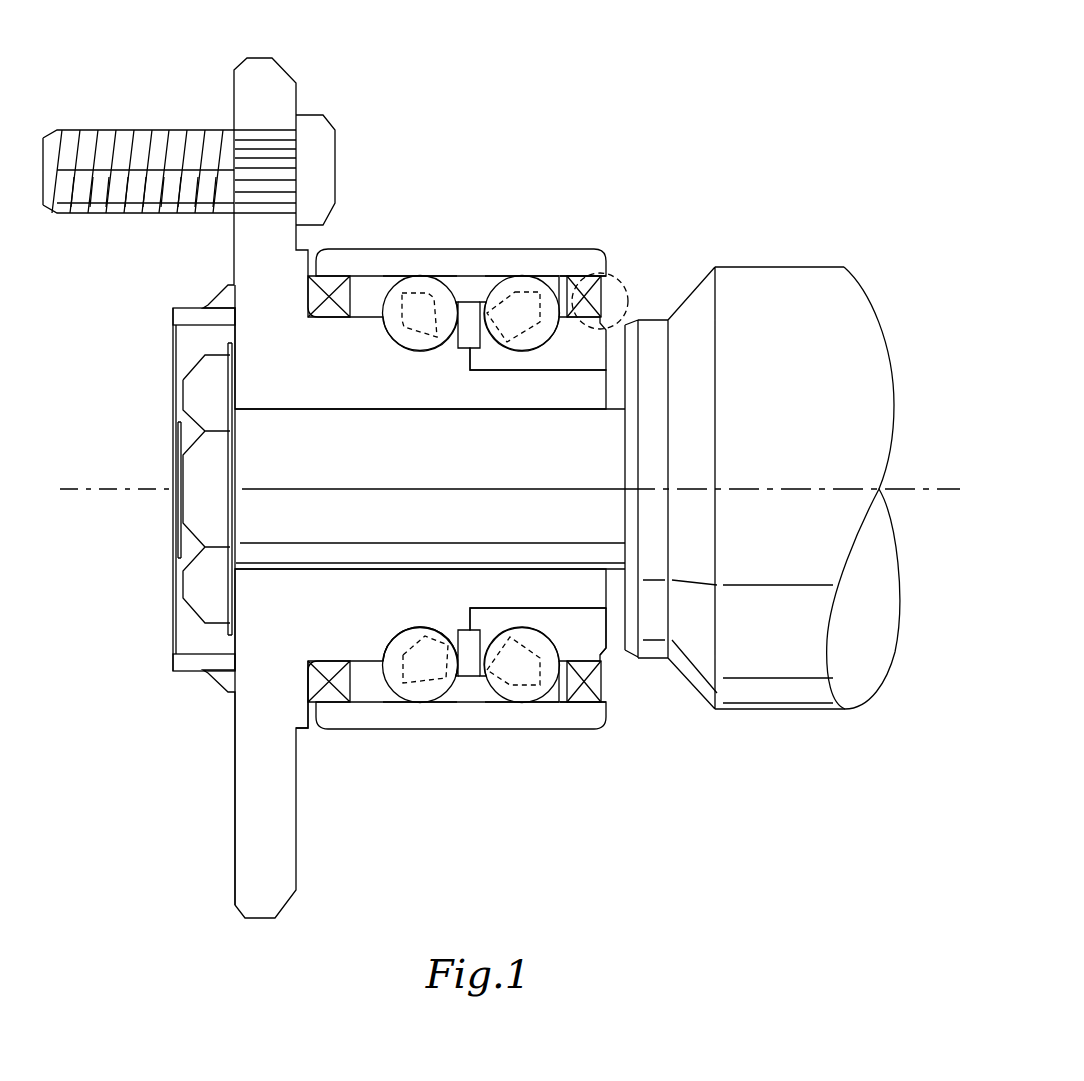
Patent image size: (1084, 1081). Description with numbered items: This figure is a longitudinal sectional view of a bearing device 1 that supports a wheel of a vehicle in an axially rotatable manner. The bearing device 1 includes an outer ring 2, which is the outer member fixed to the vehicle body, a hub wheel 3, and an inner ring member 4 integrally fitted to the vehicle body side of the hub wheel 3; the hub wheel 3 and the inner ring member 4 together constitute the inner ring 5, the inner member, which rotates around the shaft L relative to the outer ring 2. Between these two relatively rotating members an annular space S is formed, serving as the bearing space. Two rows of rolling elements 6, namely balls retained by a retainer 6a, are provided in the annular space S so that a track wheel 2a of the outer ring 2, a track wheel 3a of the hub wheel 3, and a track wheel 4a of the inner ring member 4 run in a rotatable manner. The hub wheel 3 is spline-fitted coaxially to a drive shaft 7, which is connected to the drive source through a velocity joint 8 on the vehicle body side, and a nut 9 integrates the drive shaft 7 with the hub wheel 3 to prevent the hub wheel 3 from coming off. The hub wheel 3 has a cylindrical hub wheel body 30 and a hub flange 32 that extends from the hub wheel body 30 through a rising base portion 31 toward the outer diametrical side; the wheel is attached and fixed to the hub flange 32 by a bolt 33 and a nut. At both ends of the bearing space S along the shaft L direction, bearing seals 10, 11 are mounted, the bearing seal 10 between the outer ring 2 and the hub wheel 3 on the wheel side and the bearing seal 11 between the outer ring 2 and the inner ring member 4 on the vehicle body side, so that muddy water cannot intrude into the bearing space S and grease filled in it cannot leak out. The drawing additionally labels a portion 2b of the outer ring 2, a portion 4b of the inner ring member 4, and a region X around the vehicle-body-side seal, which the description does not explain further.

The bearing device 1 is at (501, 471).
The outer ring 2 is at (461, 446).
The track wheel of the outer ring 2a is at (425, 283).
The outer ring end portion 2b is at (563, 283).
The hub wheel 3 is at (374, 500).
The track wheel of the hub wheel 3a is at (392, 688).
The inner ring member 4 is at (401, 559).
The track wheel of the inner ring member 4a is at (544, 655).
The inner ring flange portion 4b is at (603, 674).
The inner ring 5 is at (385, 500).
The rolling elements 6 is at (527, 285).
The retainer 6a is at (411, 288).
The drive shaft 7 is at (307, 658).
The velocity joint 8 is at (805, 692).
The nut 9 is at (197, 509).
The bearing seal 10 is at (338, 282).
The bearing seal 11 is at (583, 282).
The hub wheel body 30 is at (342, 703).
The rising base portion 31 is at (397, 592).
The hub flange 32 is at (257, 890).
The bolt 33 is at (307, 137).
The annular space S is at (467, 670).
The region X is at (622, 280).
The shaft L is at (920, 478).